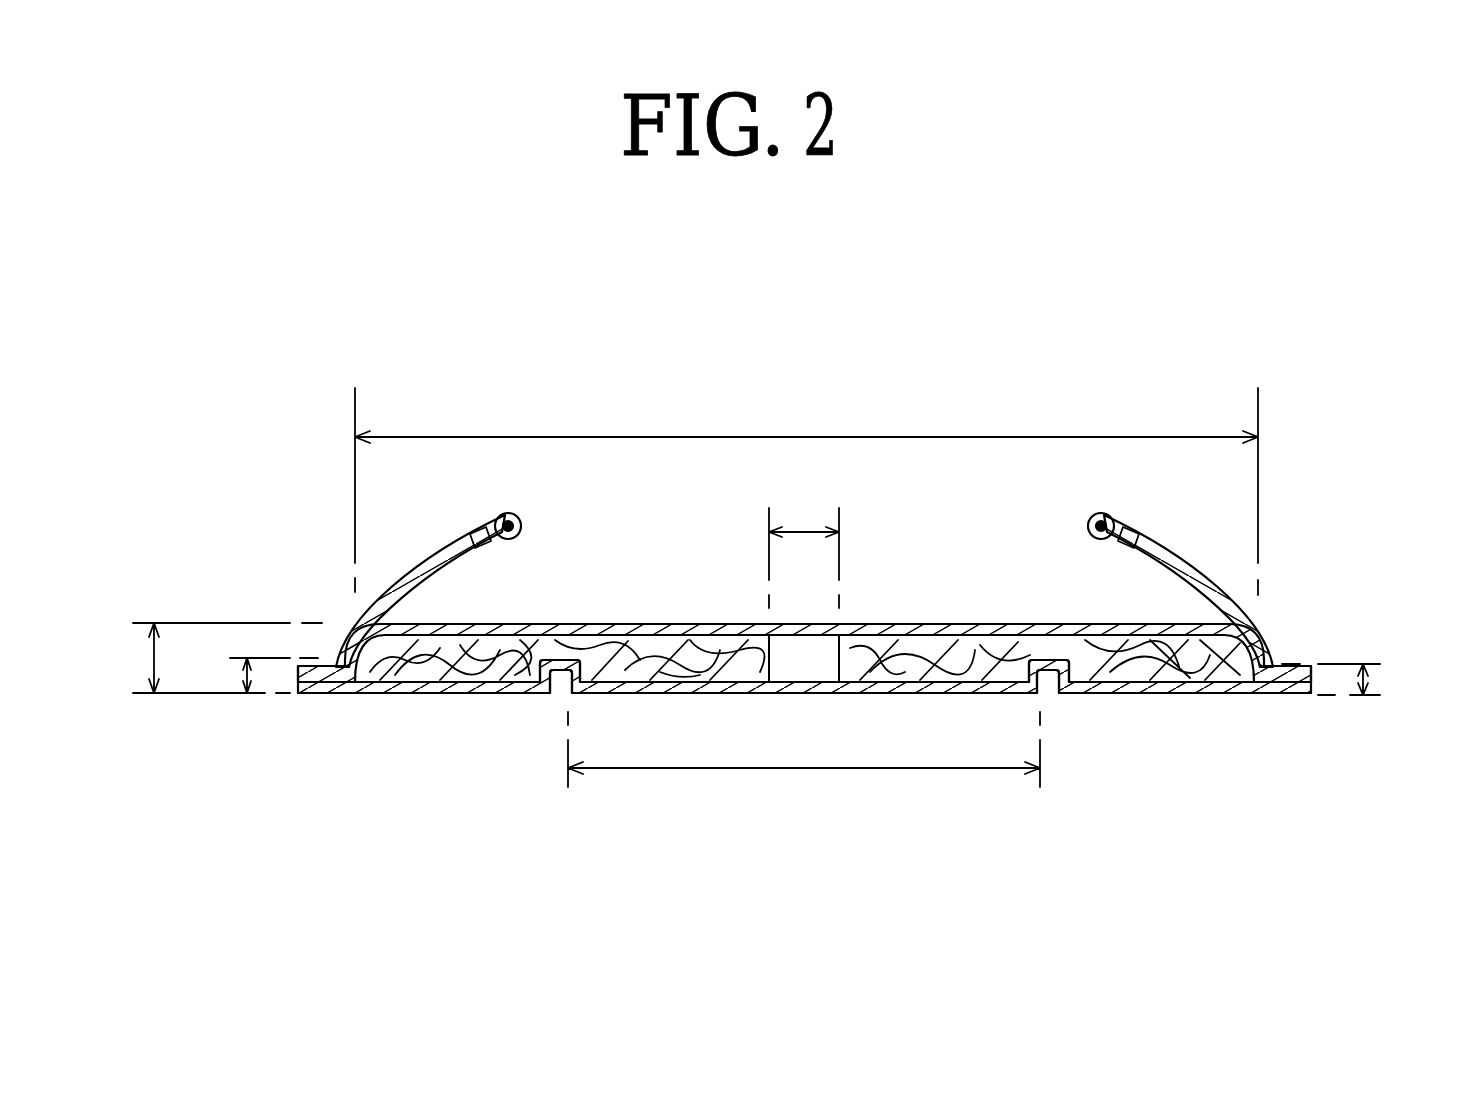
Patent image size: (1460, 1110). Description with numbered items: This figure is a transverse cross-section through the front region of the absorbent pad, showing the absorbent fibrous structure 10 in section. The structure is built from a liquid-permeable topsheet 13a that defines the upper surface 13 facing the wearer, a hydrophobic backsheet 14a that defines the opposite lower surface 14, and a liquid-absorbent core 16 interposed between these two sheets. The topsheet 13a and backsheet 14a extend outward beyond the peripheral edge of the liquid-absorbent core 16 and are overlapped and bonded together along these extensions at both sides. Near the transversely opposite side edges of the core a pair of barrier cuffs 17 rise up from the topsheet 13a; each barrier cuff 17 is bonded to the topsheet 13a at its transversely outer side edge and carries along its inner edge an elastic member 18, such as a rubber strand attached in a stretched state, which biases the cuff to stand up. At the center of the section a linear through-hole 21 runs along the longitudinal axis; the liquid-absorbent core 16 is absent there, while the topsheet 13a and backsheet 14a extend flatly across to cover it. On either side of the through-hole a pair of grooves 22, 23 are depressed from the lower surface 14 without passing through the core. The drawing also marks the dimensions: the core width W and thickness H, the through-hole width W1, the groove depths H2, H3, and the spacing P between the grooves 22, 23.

The absorbent fibrous structure 10 is at (1141, 356).
The upper surface 13 is at (962, 632).
The topsheet 13a is at (1283, 693).
The lower surface 14 is at (1222, 690).
The backsheet 14a is at (1295, 697).
The liquid-absorbent core 16 is at (372, 668).
The barrier cuff 17 is at (430, 556).
The elastic member 18 is at (503, 520).
The linear through-hole 21 is at (788, 647).
The groove 22 is at (557, 680).
The groove 23 is at (1050, 680).
The width dimension W is at (817, 435).
The width dimension of the linear through-hole W1 is at (807, 525).
The thickness dimension H is at (152, 658).
The depth dimension H2 is at (246, 672).
The depth dimension H3 is at (1368, 680).
The spacing dimension P is at (788, 770).